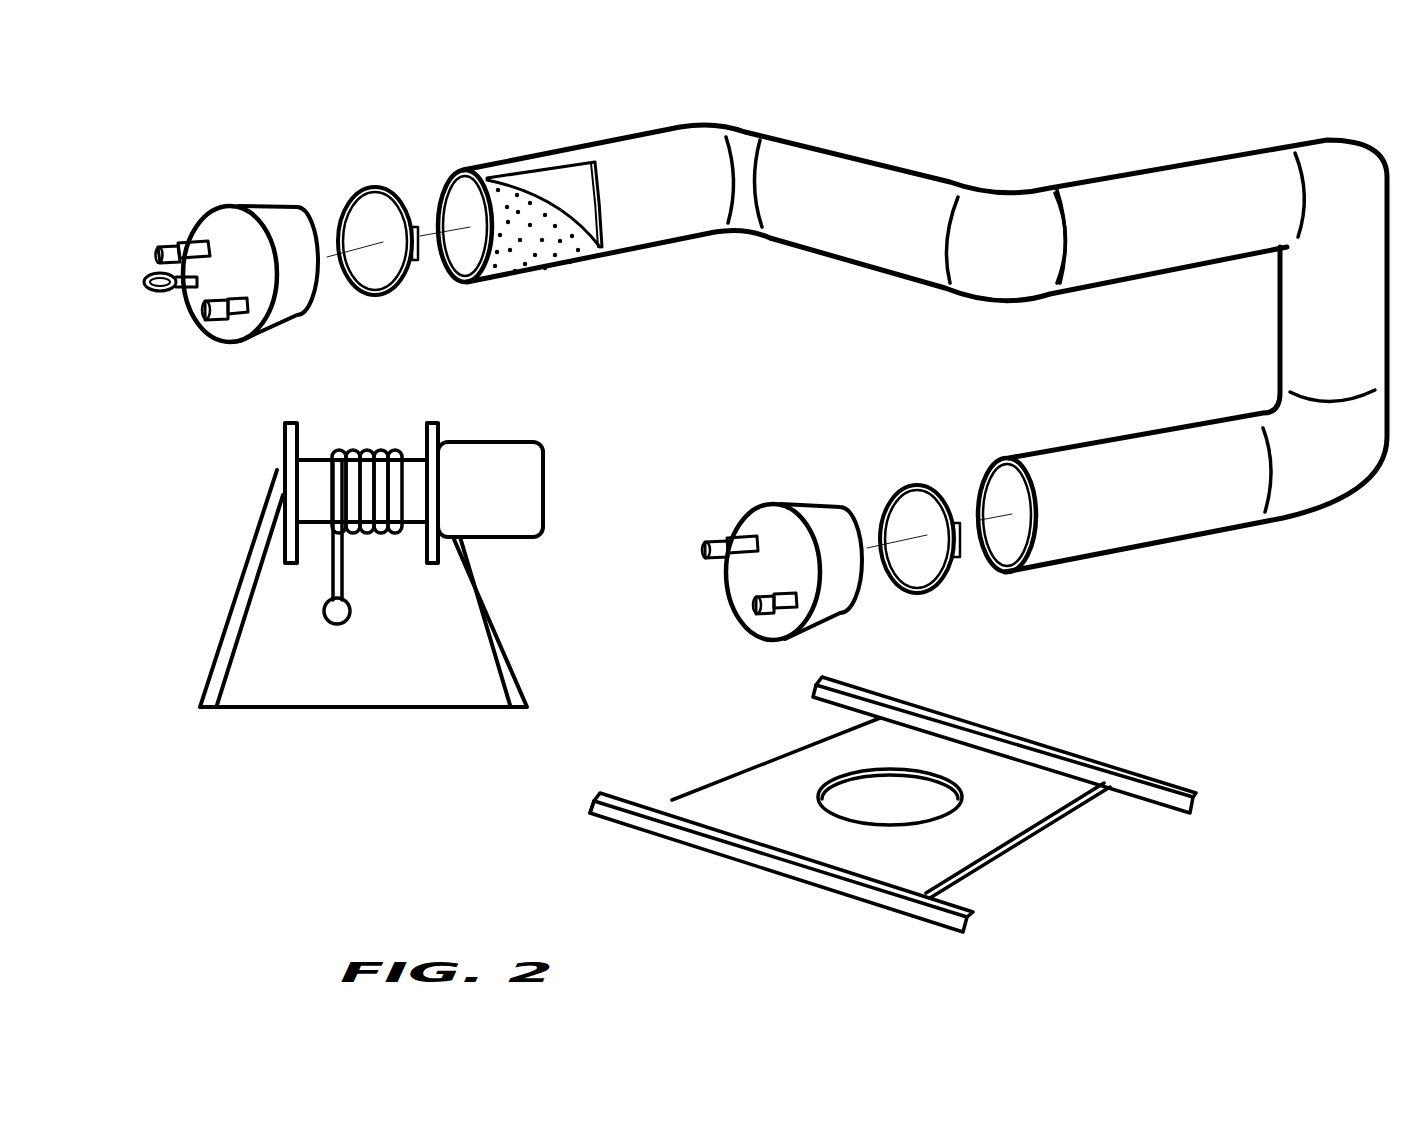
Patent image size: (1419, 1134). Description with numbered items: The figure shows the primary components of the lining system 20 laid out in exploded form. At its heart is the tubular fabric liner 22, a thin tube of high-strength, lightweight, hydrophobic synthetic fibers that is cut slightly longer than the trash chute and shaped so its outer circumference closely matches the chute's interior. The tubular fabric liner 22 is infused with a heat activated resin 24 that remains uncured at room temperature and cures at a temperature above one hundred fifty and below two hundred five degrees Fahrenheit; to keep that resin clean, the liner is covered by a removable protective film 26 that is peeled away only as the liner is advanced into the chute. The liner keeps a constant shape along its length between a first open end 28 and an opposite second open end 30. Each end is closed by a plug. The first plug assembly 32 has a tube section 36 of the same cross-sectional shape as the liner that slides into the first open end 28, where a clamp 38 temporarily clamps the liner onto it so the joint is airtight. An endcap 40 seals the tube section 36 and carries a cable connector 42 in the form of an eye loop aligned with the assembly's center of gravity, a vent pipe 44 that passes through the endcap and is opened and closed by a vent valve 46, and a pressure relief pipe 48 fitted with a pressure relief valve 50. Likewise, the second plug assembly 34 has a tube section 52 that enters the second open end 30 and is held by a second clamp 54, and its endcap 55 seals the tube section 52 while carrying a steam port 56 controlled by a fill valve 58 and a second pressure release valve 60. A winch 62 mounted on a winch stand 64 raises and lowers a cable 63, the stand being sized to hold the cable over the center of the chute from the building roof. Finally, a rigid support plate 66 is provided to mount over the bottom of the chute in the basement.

The lining system 20 is at (899, 318).
The tubular fabric liner 22 is at (563, 266).
The heat activated resin 24 is at (525, 230).
The removable protective film 26 is at (563, 178).
The first open end 28 is at (463, 208).
The second open end 30 is at (1007, 495).
The first plug assembly 32 is at (223, 269).
The second plug assembly 34 is at (759, 559).
The tube section 36 is at (297, 283).
The clamp 38 is at (357, 187).
The endcap 40 is at (237, 247).
The cable connector 42 is at (172, 293).
The vent pipe 44 is at (202, 242).
The vent valve 46 is at (153, 253).
The pressure relief pipe 48 is at (247, 307).
The pressure relief valve 50 is at (212, 306).
The tube section 52 is at (823, 517).
The second clamp 54 is at (917, 484).
The endcap 55 is at (748, 582).
The steam port 56 is at (742, 534).
The fill valve 58 is at (712, 563).
The second pressure release valve 60 is at (772, 613).
The winch 62 is at (490, 452).
The cable 63 is at (368, 537).
The winch stand 64 is at (379, 588).
The support plate 66 is at (700, 848).